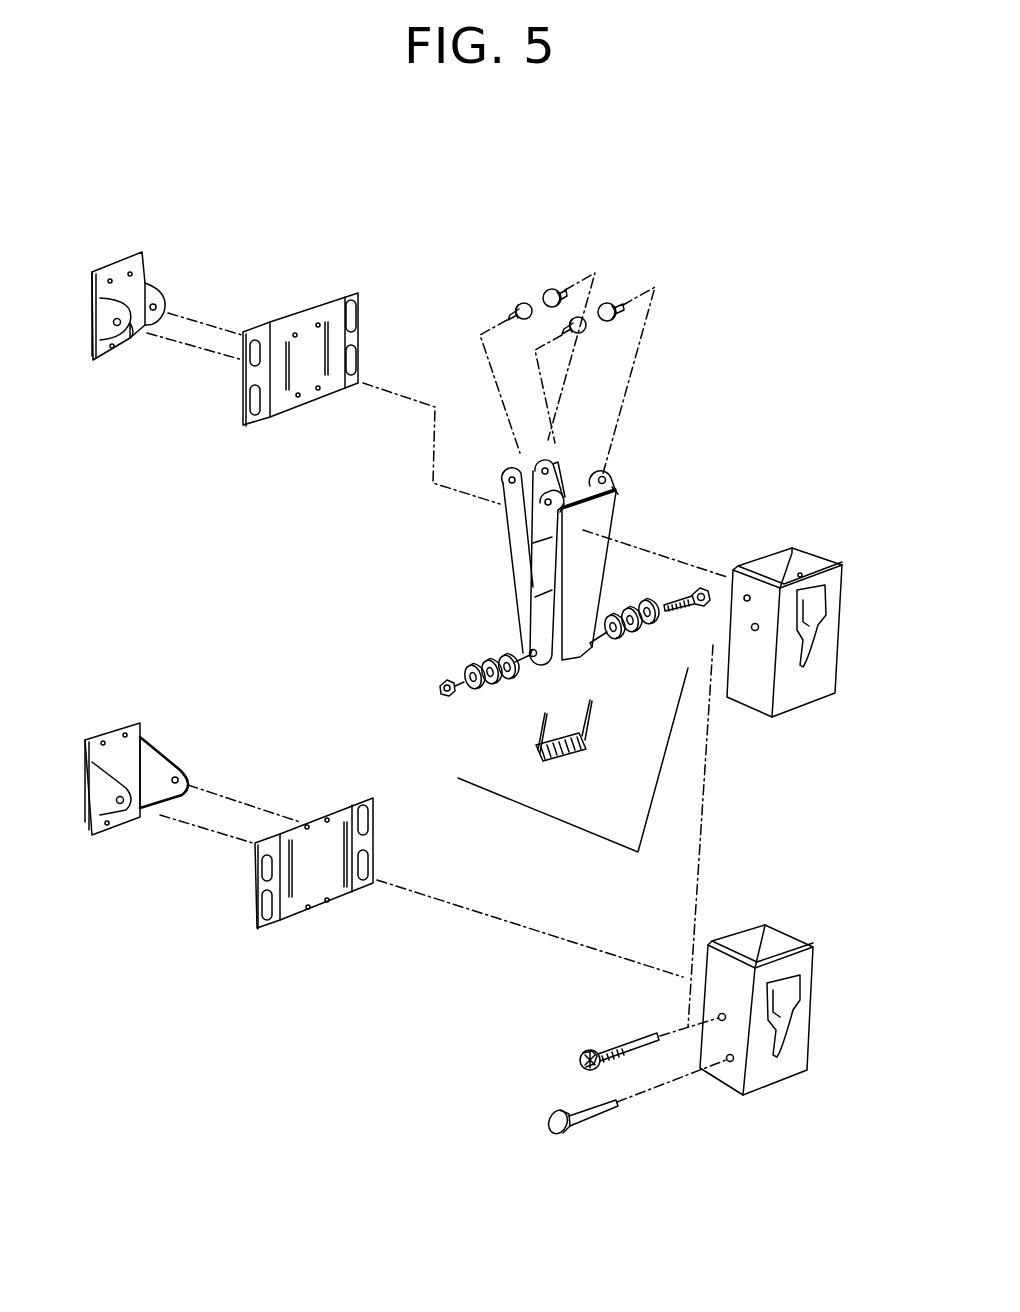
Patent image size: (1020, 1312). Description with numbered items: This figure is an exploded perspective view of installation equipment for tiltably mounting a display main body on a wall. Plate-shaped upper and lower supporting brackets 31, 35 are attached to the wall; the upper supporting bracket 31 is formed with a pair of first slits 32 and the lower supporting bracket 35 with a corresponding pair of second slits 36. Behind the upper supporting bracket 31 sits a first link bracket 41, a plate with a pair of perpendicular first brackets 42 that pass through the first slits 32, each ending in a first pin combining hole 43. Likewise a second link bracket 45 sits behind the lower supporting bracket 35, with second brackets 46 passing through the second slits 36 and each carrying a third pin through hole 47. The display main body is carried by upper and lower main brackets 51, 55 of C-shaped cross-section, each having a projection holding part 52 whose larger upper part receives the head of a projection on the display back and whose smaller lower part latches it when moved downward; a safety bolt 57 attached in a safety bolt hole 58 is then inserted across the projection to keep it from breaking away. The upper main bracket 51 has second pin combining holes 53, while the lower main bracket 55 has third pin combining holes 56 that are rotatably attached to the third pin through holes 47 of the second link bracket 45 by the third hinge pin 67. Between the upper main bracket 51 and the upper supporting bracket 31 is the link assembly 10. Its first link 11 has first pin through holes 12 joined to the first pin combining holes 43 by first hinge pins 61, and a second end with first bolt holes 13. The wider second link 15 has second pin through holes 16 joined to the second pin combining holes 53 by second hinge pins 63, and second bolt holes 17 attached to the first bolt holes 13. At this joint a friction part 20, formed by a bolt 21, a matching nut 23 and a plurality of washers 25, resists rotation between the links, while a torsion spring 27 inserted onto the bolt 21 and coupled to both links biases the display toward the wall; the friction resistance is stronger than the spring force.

The link assembly 10 is at (650, 430).
The first link 11 is at (518, 548).
The first pin through hole 12 is at (535, 466).
The first bolt hole 13 is at (529, 652).
The second link 15 is at (597, 563).
The second pin through hole 16 is at (563, 518).
The second bolt hole 17 is at (531, 679).
The friction part 20 is at (573, 774).
The bolt 21 is at (676, 612).
The nut 23 is at (447, 698).
The washer 25 is at (507, 680).
The torsion spring 27 is at (580, 760).
The upper supporting bracket 31 is at (366, 305).
The first slit 32 is at (290, 342).
The lower supporting bracket 35 is at (369, 792).
The second slit 36 is at (293, 840).
The first link bracket 41 is at (145, 270).
The first bracket 42 is at (112, 312).
The first pin combining hole 43 is at (151, 311).
The second link bracket 45 is at (130, 737).
The second bracket 46 is at (107, 767).
The third pin through hole 47 is at (175, 784).
The upper main bracket 51 is at (844, 540).
The projection holding part 52 is at (823, 622).
The second pin combining hole 53 is at (797, 575).
The lower main bracket 55 is at (809, 922).
The third pin combining hole 56 is at (729, 1063).
The safety bolt 57 is at (637, 1040).
The safety bolt hole 58 is at (755, 632).
The first hinge pin 61 is at (543, 292).
The second hinge pin 63 is at (580, 316).
The third hinge pin 67 is at (560, 1134).